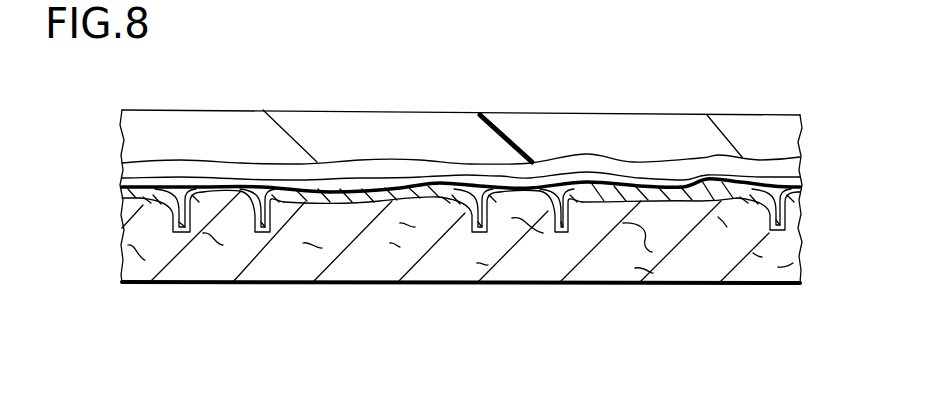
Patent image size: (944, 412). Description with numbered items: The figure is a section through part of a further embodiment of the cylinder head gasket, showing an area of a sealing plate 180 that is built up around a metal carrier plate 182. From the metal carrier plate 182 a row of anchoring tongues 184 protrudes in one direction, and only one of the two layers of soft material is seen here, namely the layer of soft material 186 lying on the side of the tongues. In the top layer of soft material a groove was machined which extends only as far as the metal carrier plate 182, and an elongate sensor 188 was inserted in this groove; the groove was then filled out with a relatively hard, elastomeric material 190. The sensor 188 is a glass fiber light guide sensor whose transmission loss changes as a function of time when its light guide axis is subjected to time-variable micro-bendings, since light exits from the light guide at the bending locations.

The sealing plate 180 is at (214, 285).
The metal carrier plate 182 is at (364, 203).
The anchoring tongues 184 is at (263, 236).
The layer of soft material 186 is at (613, 257).
The sensor 188 is at (371, 162).
The elastomeric material 190 is at (562, 125).